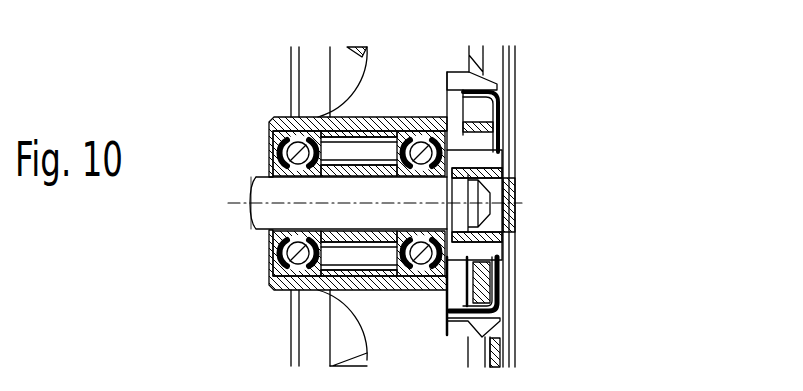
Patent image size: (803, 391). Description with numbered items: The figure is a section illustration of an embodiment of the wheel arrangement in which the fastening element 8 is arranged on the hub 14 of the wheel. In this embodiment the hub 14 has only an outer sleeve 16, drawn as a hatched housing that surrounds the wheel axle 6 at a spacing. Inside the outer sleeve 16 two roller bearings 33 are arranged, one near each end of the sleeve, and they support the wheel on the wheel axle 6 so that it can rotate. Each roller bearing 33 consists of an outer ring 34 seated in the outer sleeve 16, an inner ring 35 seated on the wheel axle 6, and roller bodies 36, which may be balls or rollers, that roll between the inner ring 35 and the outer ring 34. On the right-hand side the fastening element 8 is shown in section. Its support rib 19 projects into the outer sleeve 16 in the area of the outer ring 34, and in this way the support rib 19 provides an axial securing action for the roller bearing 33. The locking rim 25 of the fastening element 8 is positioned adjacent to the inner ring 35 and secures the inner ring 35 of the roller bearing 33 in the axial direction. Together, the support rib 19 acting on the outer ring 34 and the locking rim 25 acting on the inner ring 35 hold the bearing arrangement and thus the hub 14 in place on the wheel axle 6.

The wheel axle 6 is at (261, 216).
The fastening element 8 is at (503, 240).
The hub 14 is at (240, 164).
The outer sleeve 16 is at (360, 127).
The support rib 19 is at (491, 146).
The locking rim 25 is at (457, 175).
The roller bearing 33 is at (259, 126).
The outer ring 34 is at (433, 133).
The inner ring 35 is at (413, 234).
The roller bodies 36 is at (423, 257).